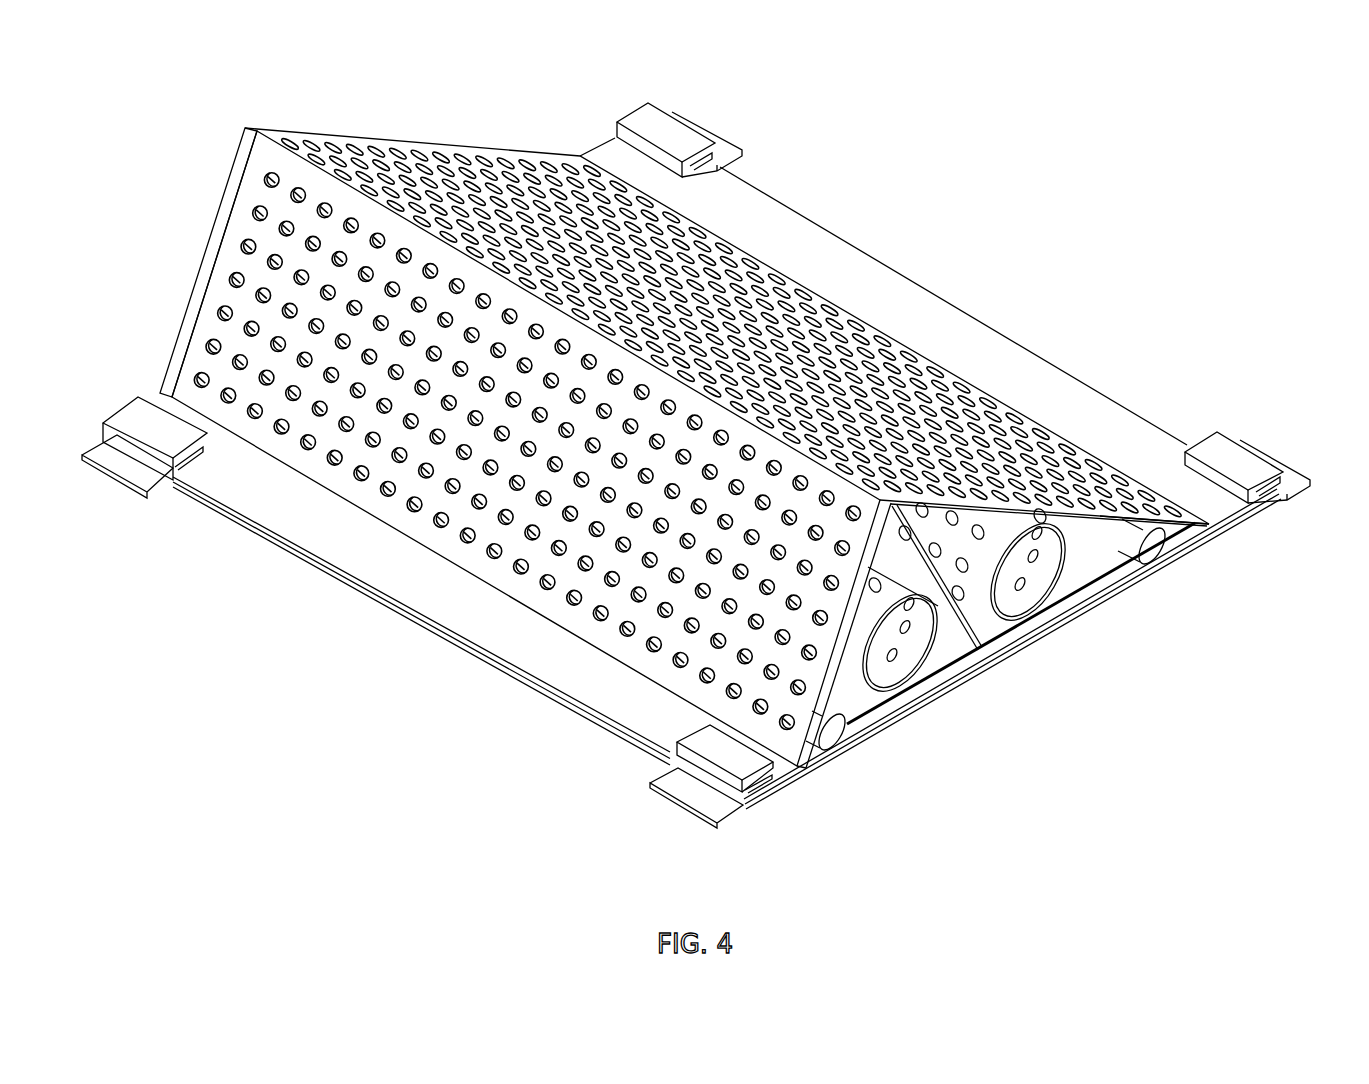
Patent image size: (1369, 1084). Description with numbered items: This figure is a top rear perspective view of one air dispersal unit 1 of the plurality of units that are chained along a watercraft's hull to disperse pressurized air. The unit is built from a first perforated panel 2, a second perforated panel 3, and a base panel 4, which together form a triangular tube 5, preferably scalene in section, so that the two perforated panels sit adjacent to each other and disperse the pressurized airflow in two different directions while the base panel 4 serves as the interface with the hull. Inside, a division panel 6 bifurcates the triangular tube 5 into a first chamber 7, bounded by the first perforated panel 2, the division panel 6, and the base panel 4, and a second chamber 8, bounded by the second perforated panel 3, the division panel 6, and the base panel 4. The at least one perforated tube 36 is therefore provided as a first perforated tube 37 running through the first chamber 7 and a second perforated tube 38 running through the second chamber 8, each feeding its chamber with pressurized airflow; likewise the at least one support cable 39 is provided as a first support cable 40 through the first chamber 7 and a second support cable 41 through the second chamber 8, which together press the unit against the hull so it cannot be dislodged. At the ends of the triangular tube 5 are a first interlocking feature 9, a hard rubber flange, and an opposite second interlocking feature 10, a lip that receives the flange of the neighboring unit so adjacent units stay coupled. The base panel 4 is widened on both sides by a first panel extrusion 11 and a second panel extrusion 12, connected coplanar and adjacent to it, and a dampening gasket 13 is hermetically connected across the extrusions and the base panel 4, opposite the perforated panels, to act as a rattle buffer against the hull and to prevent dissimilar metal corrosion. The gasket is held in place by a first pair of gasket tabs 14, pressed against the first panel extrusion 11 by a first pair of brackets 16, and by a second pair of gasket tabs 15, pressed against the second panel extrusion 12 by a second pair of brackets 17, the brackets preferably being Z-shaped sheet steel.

The air dispersal unit 1 is at (1006, 86).
The first perforated panel 2 is at (495, 160).
The second perforated panel 3 is at (230, 223).
The base panel 4 is at (1100, 590).
The triangular tube 5 is at (198, 134).
The division panel 6 is at (990, 655).
The first chamber 7 is at (1155, 658).
The second chamber 8 is at (937, 768).
The first interlocking feature 9 is at (190, 313).
The second interlocking feature 10 is at (1190, 531).
The first panel extrusion 11 is at (990, 332).
The second panel extrusion 12 is at (315, 532).
The dampening gasket 13 is at (470, 650).
The first pair of gasket tabs 14 is at (625, 130).
The second pair of gasket tabs 15 is at (132, 412).
The first pair of brackets 16 is at (723, 150).
The second pair of brackets 17 is at (113, 460).
The perforated tube 36 is at (994, 633).
The first perforated tube 37 is at (1020, 606).
The second perforated tube 38 is at (900, 680).
The support cable 39 is at (1028, 660).
The first support cable 40 is at (1155, 552).
The second support cable 41 is at (840, 746).